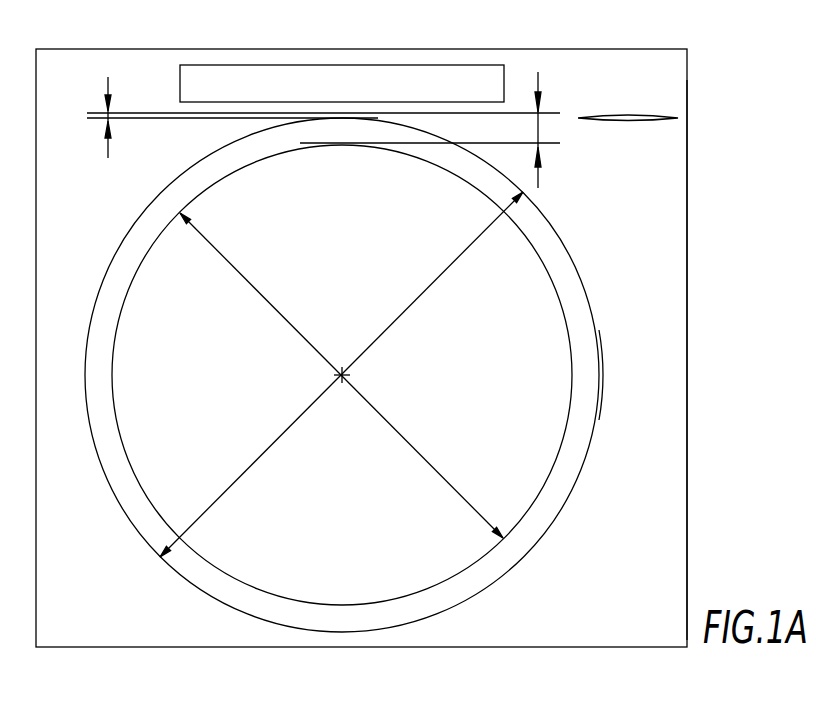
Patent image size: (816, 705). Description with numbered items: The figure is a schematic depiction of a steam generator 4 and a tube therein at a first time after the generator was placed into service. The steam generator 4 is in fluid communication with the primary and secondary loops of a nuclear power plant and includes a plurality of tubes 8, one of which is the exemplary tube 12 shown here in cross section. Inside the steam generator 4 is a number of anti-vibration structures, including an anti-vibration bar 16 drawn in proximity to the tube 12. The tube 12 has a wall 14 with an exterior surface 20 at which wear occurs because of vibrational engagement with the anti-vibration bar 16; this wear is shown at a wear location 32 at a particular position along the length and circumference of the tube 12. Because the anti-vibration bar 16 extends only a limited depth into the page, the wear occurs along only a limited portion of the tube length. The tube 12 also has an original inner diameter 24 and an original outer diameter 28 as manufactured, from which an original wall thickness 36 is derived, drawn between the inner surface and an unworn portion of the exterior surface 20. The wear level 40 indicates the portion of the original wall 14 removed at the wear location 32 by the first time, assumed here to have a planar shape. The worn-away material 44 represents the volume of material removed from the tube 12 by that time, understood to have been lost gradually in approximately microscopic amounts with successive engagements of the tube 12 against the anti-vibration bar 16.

The steam generator 4 is at (690, 373).
The tubes 8 is at (667, 187).
The tube 12 is at (588, 290).
The wall 14 is at (578, 447).
The anti-vibration bar 16 is at (505, 76).
The exterior surface 20 is at (600, 355).
The original inner diameter 24 is at (397, 430).
The original outer diameter 28 is at (298, 413).
The wear location 32 is at (340, 112).
The original wall thickness 36 is at (540, 124).
The wear level 40 is at (107, 150).
The worn-away material 44 is at (622, 115).